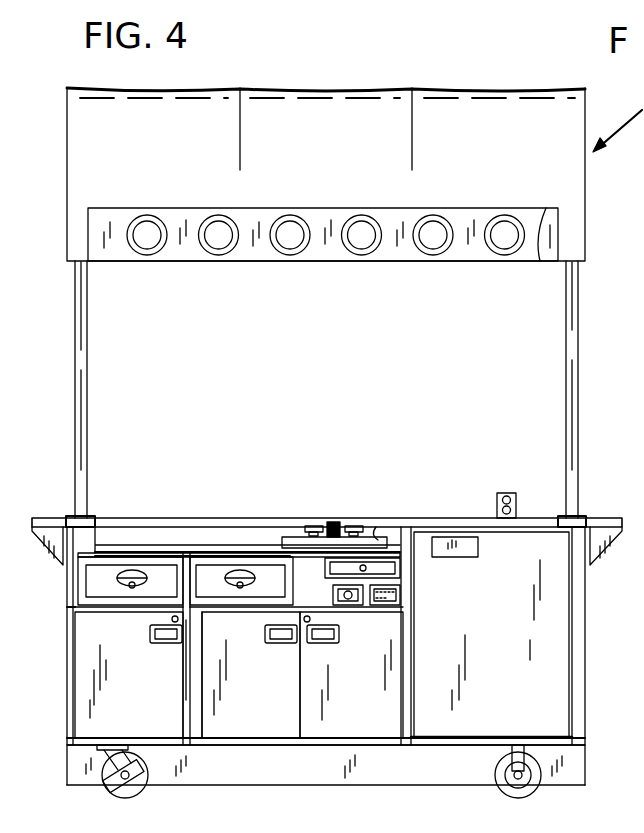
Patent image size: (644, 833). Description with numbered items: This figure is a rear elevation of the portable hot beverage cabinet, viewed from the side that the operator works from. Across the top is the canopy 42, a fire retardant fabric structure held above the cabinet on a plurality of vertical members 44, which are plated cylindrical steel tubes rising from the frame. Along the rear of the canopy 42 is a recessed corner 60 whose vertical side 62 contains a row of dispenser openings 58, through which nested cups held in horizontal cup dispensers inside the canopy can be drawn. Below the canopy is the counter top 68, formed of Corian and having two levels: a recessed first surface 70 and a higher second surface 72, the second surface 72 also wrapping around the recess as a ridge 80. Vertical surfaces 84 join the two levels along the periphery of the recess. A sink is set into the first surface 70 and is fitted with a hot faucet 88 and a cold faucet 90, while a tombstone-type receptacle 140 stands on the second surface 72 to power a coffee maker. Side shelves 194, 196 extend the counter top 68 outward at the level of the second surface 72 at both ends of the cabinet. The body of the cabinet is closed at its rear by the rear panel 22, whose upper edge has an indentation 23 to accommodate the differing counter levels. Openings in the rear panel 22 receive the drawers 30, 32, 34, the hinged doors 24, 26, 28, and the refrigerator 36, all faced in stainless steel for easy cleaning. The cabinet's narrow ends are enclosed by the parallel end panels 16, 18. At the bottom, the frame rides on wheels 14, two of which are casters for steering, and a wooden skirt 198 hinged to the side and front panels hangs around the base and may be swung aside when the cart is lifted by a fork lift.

The canopy 42 is at (468, 95).
The dispenser openings 58 is at (160, 252).
The vertical side 62 is at (405, 262).
The recessed corner 60 is at (540, 262).
The vertical members 44 is at (82, 375).
The side shelf 194 is at (55, 518).
The side shelf 196 is at (600, 518).
The vertical surfaces 84 is at (97, 533).
The indentation 23 is at (205, 553).
The ridge 80 is at (250, 520).
The first surface 70 is at (263, 545).
The hot faucet 88 is at (309, 523).
The cold faucet 90 is at (352, 523).
The counter top 68 is at (321, 498).
The second surface 72 is at (428, 518).
The receptacle 140 is at (505, 492).
The drawer 30 is at (93, 584).
The drawer 32 is at (212, 588).
The drawer 34 is at (392, 568).
The refrigerator 36 is at (491, 634).
The end panel 18 is at (587, 652).
The hinged door 24 is at (129, 672).
The hinged door 26 is at (296, 672).
The hinged door 28 is at (351, 675).
The end panel 16 is at (65, 690).
The rear panel 22 is at (192, 733).
The wheels 14 is at (145, 790).
The skirt 198 is at (445, 773).